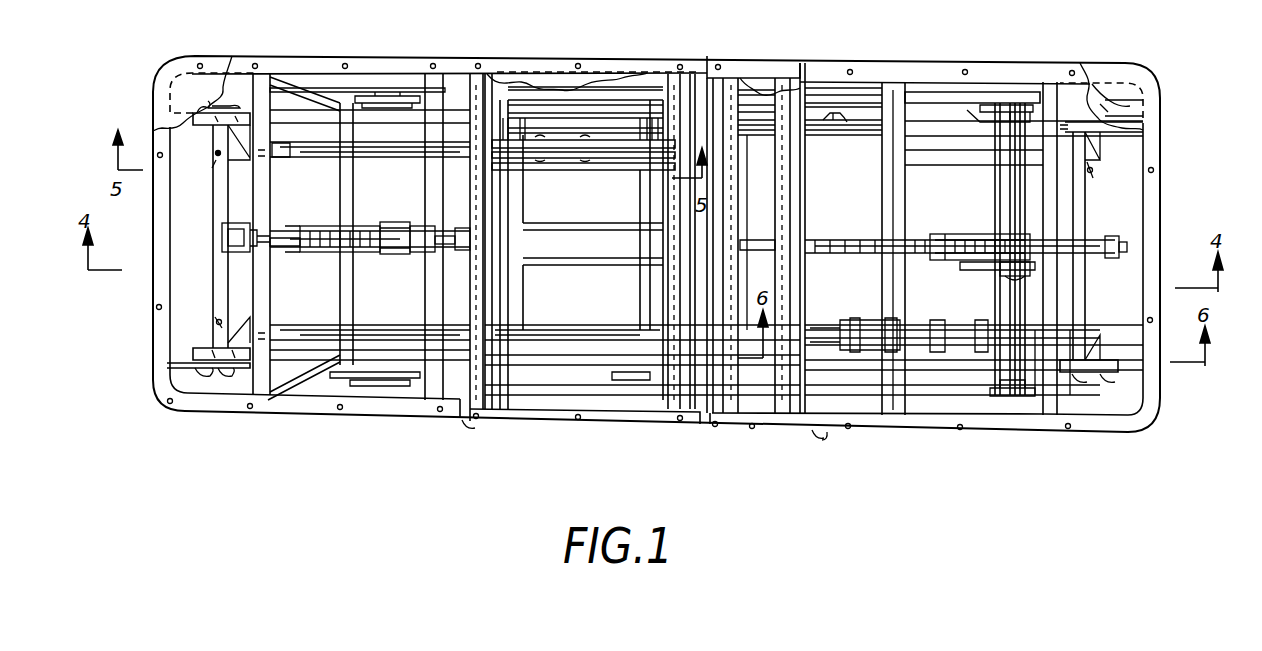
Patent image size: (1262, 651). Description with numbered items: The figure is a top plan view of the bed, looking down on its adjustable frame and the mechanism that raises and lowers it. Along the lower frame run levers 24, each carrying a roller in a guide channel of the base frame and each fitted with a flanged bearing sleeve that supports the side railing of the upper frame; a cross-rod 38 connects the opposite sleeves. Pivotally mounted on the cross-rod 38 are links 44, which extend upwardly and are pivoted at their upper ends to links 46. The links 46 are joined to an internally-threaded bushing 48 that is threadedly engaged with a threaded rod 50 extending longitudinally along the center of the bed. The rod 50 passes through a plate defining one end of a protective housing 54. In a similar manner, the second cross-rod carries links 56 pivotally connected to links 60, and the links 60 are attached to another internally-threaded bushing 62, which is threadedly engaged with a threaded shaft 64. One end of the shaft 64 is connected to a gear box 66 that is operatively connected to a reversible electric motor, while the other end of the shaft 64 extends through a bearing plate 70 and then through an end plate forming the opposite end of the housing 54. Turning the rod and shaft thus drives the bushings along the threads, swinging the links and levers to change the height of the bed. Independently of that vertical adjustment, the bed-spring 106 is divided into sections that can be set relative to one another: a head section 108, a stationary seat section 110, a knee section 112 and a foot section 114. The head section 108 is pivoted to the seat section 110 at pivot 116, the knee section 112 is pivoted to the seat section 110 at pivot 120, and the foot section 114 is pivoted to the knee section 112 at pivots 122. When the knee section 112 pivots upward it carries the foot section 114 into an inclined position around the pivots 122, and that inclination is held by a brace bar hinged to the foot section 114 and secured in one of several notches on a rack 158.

The lever 24 is at (1014, 106).
The cross-rod 38 is at (1022, 194).
The link 44 is at (1014, 268).
The link 46 is at (974, 240).
The internally-threaded bushing 48 is at (936, 236).
The threaded rod 50 is at (860, 240).
The protective housing 54 is at (632, 260).
The link 56 is at (415, 232).
The link 60 is at (327, 228).
The internally-threaded bushing 62 is at (307, 230).
The threaded shaft 64 is at (301, 252).
The gear box 66 is at (232, 232).
The bearing plate 70 is at (482, 300).
The bed-spring 106 is at (1120, 68).
The head section 108 is at (929, 63).
The seat section 110 is at (728, 58).
The knee section 112 is at (648, 60).
The foot section 114 is at (413, 62).
The pivot 116 is at (708, 58).
The pivot 120 is at (694, 426).
The pivot 122 is at (467, 62).
The rack 158 is at (353, 108).